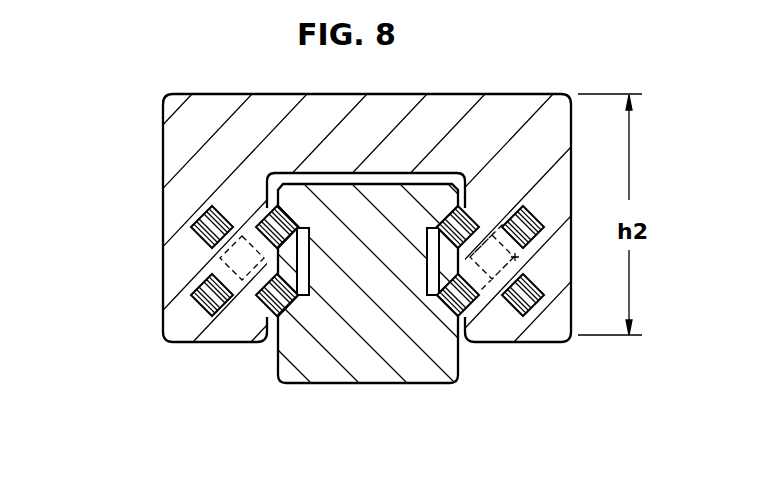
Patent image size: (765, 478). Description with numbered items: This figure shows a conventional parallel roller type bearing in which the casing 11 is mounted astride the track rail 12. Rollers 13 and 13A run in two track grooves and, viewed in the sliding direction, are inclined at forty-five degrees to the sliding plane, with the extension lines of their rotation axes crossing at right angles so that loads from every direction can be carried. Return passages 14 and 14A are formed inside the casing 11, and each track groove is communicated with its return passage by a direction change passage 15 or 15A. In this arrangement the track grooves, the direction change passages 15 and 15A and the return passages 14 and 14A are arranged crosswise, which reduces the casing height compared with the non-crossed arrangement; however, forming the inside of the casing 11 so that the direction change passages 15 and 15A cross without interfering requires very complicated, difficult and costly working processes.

The casing 11 is at (212, 121).
The track rail 12 is at (440, 355).
The roller 13 is at (296, 205).
The roller 13A is at (283, 308).
The return passage 14 is at (190, 297).
The return passage 14A is at (200, 232).
The direction change passage 15 is at (242, 281).
The direction change passage 15A is at (220, 258).